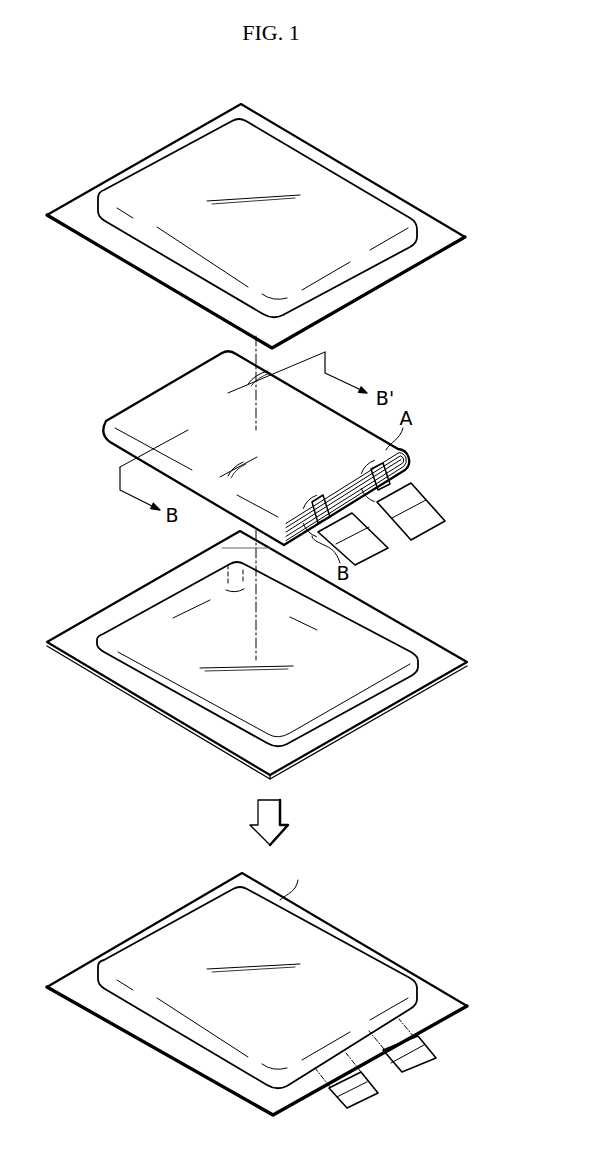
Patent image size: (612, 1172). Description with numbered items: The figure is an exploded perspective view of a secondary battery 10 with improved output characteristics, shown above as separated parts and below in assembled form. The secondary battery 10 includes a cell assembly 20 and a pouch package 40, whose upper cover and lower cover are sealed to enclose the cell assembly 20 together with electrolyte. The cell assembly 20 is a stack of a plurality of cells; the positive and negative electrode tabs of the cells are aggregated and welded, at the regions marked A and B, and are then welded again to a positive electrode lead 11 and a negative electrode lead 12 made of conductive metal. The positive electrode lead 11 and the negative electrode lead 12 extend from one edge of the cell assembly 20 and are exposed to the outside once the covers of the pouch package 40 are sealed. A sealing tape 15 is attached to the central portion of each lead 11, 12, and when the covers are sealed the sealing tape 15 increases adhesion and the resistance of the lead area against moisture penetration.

The secondary battery 10 is at (447, 134).
The positive electrode lead 11 is at (380, 552).
The negative electrode lead 12 is at (440, 520).
The sealing tape 15 is at (431, 494).
The cell assembly 20 is at (148, 382).
The pouch package 40 is at (438, 222).